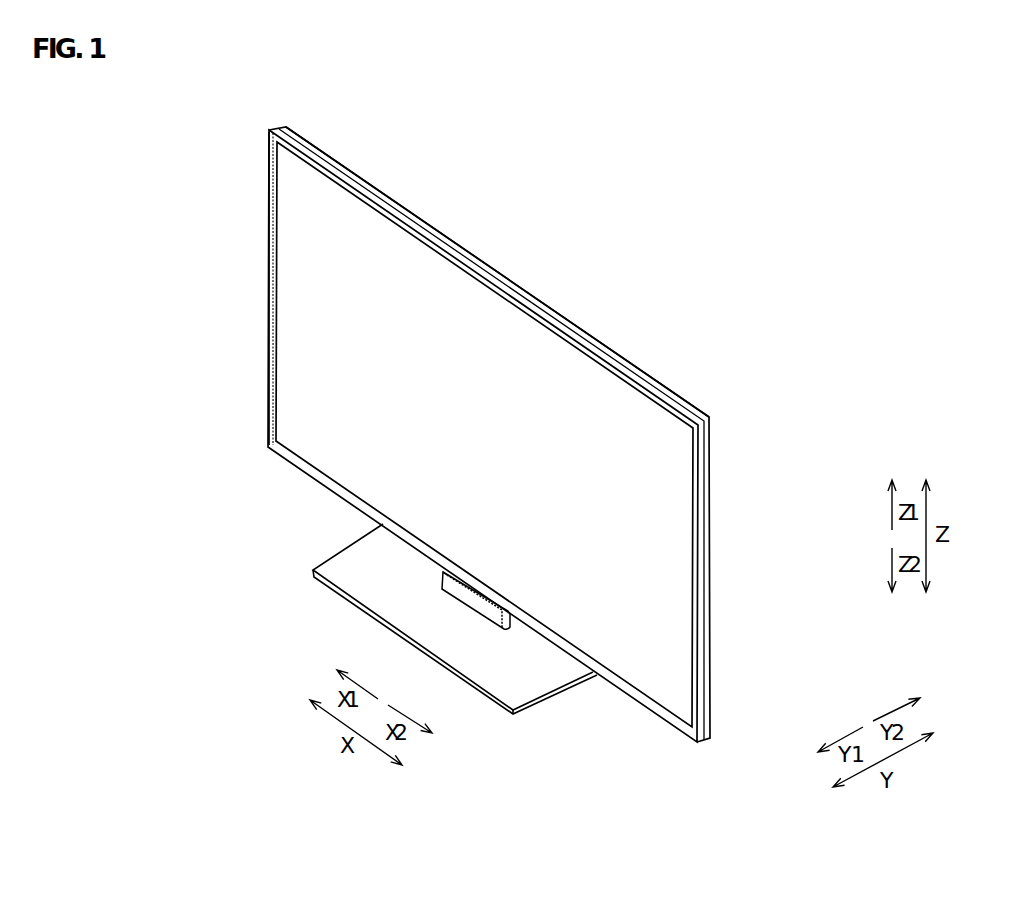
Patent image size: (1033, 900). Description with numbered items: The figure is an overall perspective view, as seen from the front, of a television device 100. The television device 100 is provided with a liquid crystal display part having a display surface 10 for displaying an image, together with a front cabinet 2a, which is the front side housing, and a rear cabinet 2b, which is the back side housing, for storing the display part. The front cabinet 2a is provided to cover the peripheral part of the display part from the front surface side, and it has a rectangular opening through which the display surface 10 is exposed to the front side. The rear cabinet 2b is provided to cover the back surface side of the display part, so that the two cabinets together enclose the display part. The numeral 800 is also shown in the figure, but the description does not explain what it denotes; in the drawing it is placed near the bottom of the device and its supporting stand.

The television device 100 is at (597, 260).
The display surface 10 is at (658, 432).
The front cabinet 2a is at (268, 200).
The rear cabinet 2b is at (370, 186).
The installation surface / stand 800 is at (653, 755).